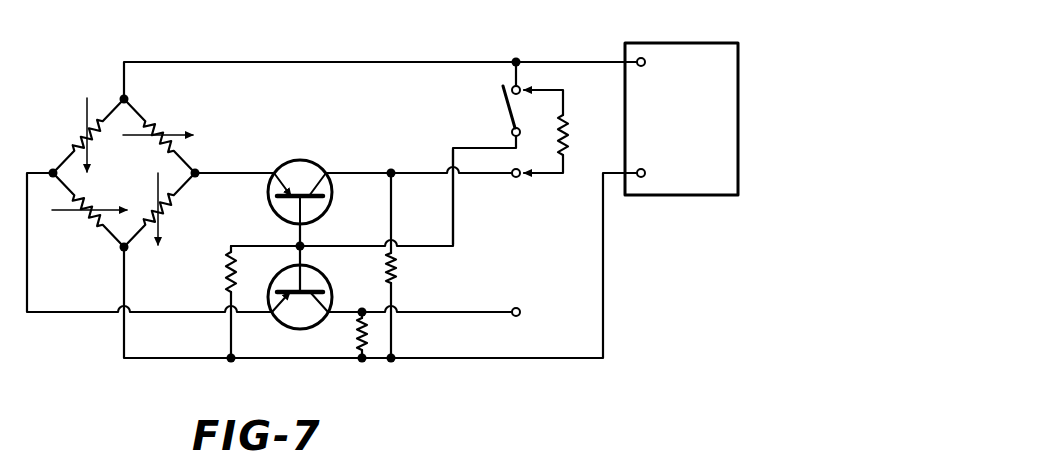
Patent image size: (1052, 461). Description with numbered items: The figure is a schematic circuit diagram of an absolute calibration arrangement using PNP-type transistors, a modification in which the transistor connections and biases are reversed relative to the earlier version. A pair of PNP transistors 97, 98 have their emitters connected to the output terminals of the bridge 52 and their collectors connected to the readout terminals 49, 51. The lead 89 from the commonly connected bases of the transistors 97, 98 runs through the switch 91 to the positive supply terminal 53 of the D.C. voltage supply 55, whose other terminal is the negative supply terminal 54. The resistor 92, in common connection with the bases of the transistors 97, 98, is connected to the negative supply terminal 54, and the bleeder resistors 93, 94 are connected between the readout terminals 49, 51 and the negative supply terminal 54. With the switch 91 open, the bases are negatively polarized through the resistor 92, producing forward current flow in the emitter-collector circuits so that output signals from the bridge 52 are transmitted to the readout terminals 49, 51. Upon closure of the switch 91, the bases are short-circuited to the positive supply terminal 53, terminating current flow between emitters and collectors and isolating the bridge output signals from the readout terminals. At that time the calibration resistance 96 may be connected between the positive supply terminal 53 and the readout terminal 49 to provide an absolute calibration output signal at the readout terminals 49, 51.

The readout terminal 49 is at (514, 178).
The readout terminal 51 is at (518, 308).
The bridge 52 is at (67, 128).
The positive supply terminal 53 is at (646, 58).
The negative supply terminal 54 is at (643, 178).
The D.C. voltage supply 55 is at (720, 43).
The lead 89 is at (453, 212).
The switch 91 is at (503, 106).
The resistor 92 is at (225, 285).
The bleeder resistor 93 is at (396, 260).
The bleeder resistor 94 is at (357, 340).
The calibration resistance 96 is at (569, 122).
The PNP transistor 97 is at (303, 160).
The PNP transistor 98 is at (288, 324).